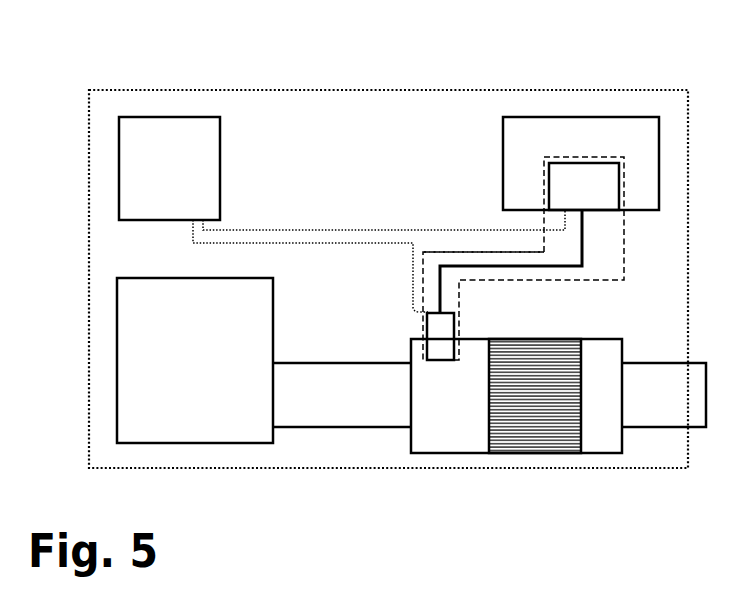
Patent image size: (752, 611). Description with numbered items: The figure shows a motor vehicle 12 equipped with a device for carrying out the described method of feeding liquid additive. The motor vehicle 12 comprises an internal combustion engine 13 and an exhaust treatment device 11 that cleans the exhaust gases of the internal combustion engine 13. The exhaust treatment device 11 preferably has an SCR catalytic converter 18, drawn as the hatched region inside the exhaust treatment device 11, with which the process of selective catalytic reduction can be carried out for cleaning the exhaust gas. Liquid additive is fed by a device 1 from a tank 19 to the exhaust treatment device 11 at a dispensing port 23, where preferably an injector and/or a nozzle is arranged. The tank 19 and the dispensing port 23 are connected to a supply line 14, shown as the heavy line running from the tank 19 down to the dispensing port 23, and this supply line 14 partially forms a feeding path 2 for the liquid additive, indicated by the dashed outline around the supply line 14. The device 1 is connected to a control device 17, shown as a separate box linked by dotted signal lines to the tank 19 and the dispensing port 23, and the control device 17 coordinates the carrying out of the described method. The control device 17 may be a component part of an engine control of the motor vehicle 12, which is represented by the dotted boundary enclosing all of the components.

The motor vehicle 12 is at (93, 68).
The control device 17 is at (220, 168).
The tank 19 is at (503, 123).
The feeding path 2 is at (598, 282).
The device 1 is at (444, 252).
The supply line 14 is at (546, 268).
The dispensing port 23 is at (455, 314).
The internal combustion engine 13 is at (273, 323).
The exhaust treatment device 11 is at (444, 453).
The SCR catalytic converter 18 is at (583, 432).